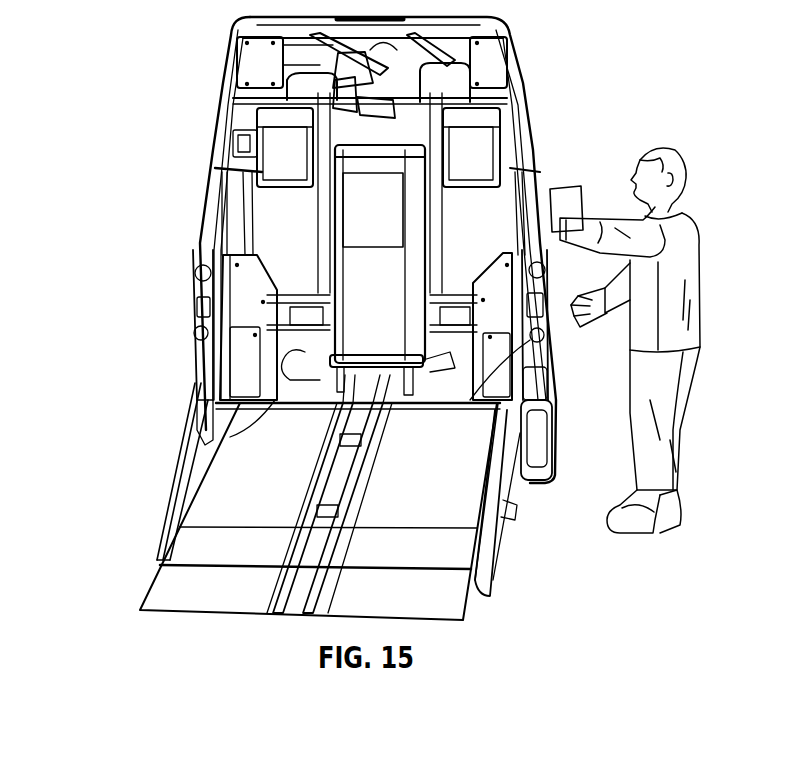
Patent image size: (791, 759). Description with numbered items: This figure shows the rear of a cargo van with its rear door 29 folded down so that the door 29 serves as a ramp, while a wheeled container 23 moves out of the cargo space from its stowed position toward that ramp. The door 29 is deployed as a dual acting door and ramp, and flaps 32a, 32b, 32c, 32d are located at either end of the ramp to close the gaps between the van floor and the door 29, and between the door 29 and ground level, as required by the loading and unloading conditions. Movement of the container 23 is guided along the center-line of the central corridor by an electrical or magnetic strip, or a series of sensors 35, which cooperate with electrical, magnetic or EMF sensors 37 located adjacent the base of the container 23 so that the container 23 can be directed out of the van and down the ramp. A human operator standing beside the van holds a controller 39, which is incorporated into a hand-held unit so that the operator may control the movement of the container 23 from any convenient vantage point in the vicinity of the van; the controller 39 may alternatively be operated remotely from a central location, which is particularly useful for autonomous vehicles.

The container 23 is at (370, 270).
The controller 39 is at (567, 178).
The sensors 37 is at (367, 362).
The sensors 35 is at (337, 400).
The door 29 is at (227, 467).
The flap 32a is at (447, 603).
The flap 32b is at (548, 345).
The flap 32c is at (210, 583).
The flap 32d is at (227, 438).